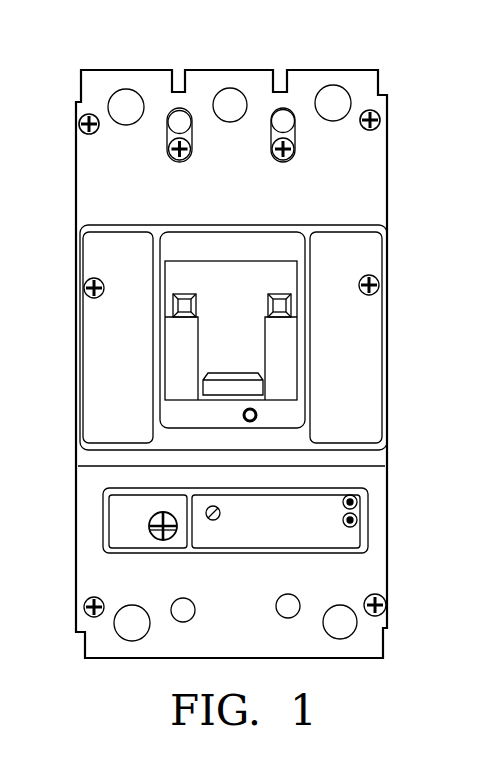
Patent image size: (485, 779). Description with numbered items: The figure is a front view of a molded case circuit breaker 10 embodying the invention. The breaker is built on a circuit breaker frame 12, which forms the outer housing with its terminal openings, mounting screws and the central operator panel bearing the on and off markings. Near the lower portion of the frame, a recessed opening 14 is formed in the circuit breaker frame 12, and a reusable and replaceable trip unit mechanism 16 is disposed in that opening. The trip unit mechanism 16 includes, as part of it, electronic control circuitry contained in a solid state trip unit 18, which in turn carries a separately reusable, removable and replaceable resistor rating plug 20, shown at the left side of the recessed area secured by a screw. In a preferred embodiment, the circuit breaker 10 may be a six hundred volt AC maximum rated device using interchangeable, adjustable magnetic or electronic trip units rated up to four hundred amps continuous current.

The molded case circuit breaker 10 is at (246, 26).
The circuit breaker frame 12 is at (387, 172).
The recessed opening 14 is at (240, 555).
The trip unit mechanism 16 is at (279, 522).
The solid state trip unit 18 is at (337, 532).
The resistor rating plug 20 is at (127, 515).